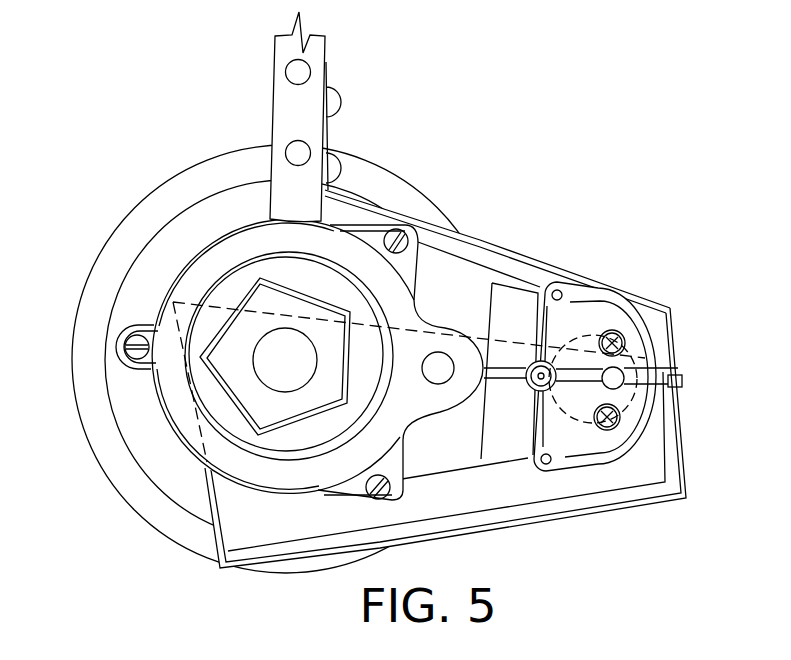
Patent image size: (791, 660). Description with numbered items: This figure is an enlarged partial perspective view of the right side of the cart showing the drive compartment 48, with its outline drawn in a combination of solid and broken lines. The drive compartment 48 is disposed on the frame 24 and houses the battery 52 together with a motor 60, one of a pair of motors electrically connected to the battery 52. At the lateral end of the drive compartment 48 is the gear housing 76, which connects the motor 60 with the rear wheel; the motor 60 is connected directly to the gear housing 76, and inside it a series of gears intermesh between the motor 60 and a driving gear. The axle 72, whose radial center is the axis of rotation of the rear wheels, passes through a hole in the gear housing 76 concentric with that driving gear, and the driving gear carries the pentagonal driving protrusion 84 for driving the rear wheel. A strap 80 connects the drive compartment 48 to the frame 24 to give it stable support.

The frame 24 is at (274, 98).
The drive compartment 48 is at (687, 480).
The battery 52 is at (665, 430).
The motor 60 is at (633, 397).
The axle 72 is at (270, 362).
The gear housing 76 is at (172, 283).
The strap 80 is at (358, 203).
The driving protrusion 84 is at (247, 295).